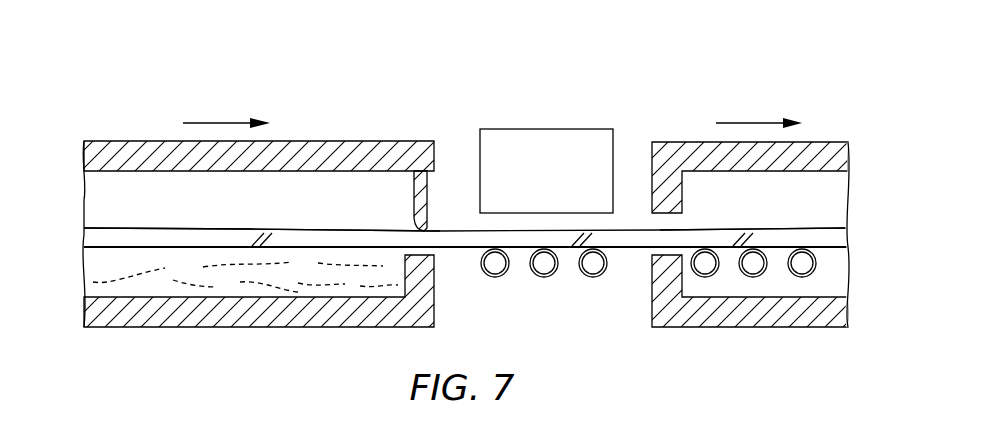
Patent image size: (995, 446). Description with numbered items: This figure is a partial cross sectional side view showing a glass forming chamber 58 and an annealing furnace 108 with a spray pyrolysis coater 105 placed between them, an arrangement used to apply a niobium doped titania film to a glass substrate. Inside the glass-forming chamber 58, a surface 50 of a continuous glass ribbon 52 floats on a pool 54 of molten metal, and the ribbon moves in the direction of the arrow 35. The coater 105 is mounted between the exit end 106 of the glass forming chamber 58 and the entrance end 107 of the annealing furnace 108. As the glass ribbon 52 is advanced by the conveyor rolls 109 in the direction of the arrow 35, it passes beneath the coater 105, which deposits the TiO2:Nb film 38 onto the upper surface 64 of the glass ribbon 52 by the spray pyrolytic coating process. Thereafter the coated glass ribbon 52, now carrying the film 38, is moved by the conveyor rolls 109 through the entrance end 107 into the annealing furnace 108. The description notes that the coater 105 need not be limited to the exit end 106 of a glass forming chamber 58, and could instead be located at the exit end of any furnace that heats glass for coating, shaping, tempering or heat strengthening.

The arrow 35 is at (220, 121).
The TiO2:Nb film 38 is at (733, 226).
The surface of glass ribbon 50 is at (207, 248).
The continuous glass ribbon 52 is at (328, 240).
The pool of molten metal 54 is at (225, 275).
The glass-forming chamber 58 is at (290, 96).
The surface of glass ribbon 64 is at (160, 227).
The spray pyrolysis coater 105 is at (543, 118).
The exit end of glass forming chamber 106 is at (438, 230).
The entrance end of annealing furnace 107 is at (652, 167).
The annealing furnace 108 is at (739, 187).
The conveyor rolls 109 is at (498, 277).